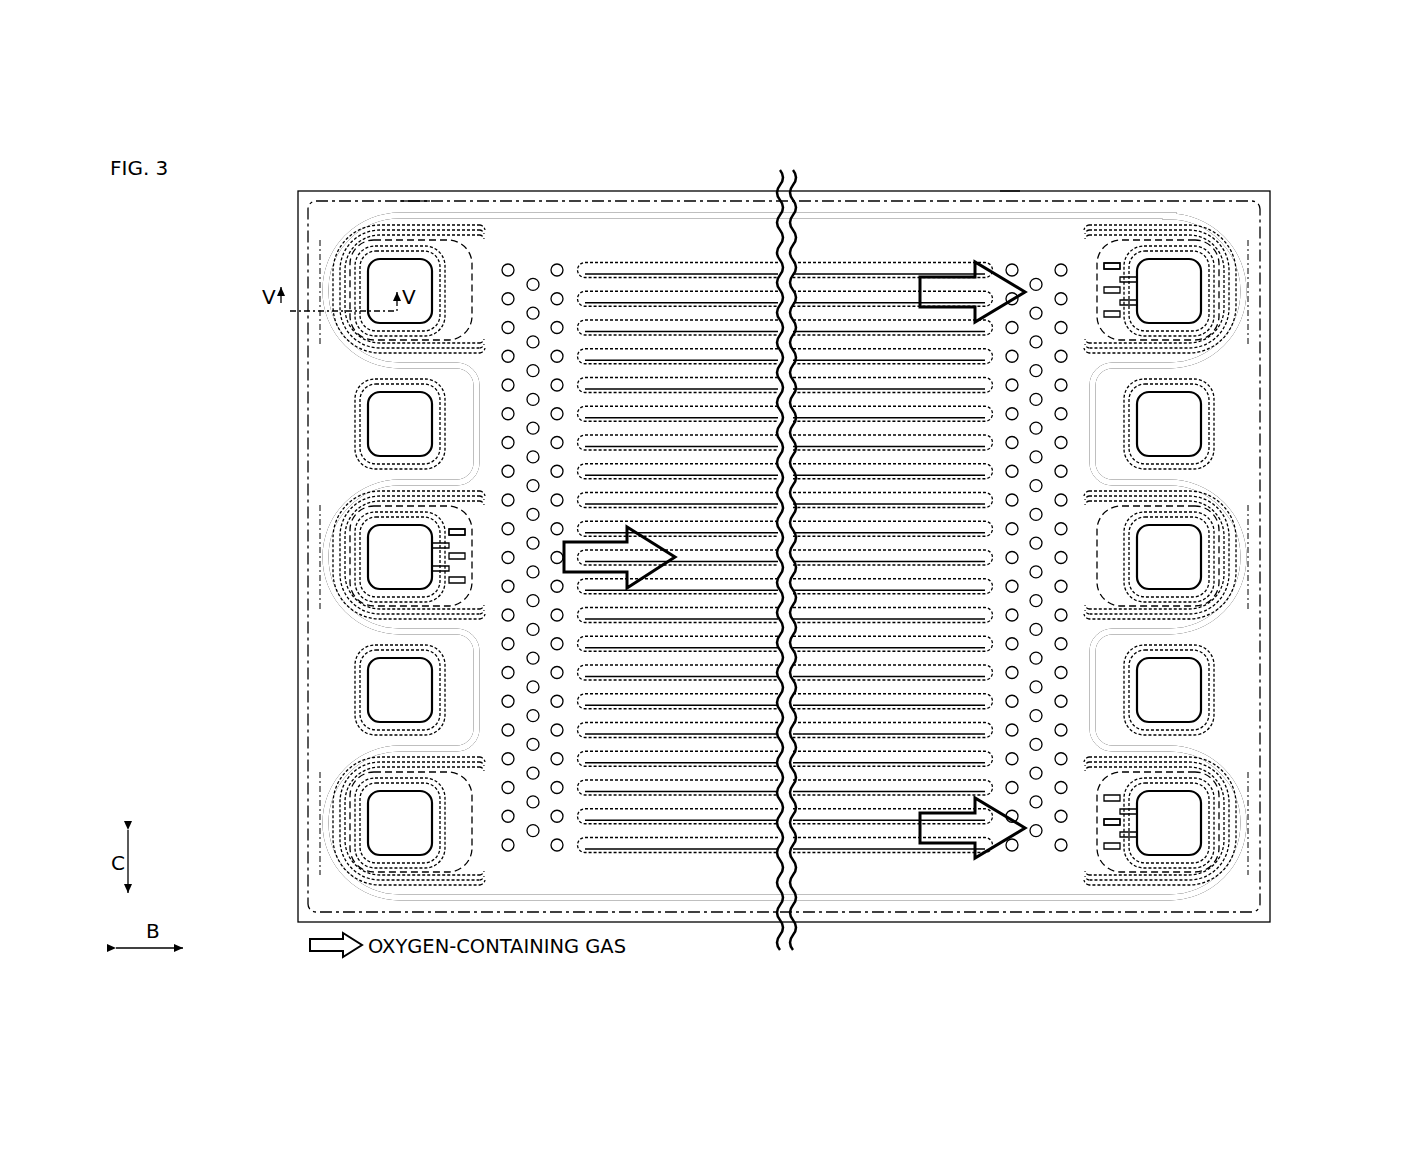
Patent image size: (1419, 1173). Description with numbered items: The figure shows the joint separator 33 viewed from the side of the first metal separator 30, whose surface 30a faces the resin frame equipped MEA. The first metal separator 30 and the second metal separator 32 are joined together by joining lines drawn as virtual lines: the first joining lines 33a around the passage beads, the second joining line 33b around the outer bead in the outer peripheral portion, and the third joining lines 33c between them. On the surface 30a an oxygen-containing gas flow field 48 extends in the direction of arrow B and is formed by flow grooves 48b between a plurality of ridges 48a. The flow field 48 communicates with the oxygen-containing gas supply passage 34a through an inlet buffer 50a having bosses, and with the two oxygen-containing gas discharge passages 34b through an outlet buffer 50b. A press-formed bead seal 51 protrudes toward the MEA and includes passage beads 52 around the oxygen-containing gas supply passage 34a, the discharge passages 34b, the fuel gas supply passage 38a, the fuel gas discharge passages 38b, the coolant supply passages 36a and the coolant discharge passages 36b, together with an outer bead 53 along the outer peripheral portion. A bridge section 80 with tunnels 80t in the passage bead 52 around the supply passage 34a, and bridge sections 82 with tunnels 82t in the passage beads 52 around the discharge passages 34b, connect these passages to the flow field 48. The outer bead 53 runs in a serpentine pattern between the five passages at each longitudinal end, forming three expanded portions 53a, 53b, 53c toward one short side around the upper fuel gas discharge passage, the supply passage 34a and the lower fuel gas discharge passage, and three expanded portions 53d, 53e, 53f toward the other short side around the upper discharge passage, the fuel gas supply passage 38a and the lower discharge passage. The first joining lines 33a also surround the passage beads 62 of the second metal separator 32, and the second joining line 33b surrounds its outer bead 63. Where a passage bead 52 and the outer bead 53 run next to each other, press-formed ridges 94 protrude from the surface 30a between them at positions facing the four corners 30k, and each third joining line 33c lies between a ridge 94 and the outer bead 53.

The first metal separator 30 is at (990, 188).
The surface 30a is at (842, 240).
The corners 30k is at (297, 190).
The second metal separator 32 is at (1022, 188).
The joint separator 33 is at (173, 207).
The first joining lines 33a is at (320, 360).
The second joining line 33b is at (414, 196).
The third joining lines 33c is at (326, 318).
The oxygen-containing gas supply passage 34a is at (386, 535).
The oxygen-containing gas discharge passages 34b is at (1170, 275).
The coolant supply passages 36a is at (1185, 440).
The coolant discharge passages 36b is at (386, 440).
The fuel gas supply passage 38a is at (1188, 567).
The fuel gas discharge passages 38b is at (386, 298).
The oxygen-containing gas flow field 48 is at (748, 172).
The ridges 48a is at (640, 300).
The flow grooves 48b is at (685, 280).
The inlet buffer 50a is at (555, 264).
The outlet buffer 50b is at (1010, 264).
The bead seal 51 is at (1363, 876).
The passage beads 52 is at (372, 262).
The outer bead 53 is at (521, 212).
The expanded portion 53a is at (340, 330).
The expanded portion 53b is at (344, 590).
The expanded portion 53c is at (344, 850).
The expanded portion 53d is at (1228, 300).
The expanded portion 53e is at (1238, 506).
The expanded portion 53f is at (1236, 848).
The passage beads 62 is at (358, 252).
The outer bead 63 is at (581, 262).
The bridge section 80 is at (460, 522).
The tunnels 80t is at (455, 581).
The bridge section 82 is at (1110, 332).
The tunnels 82t is at (1108, 264).
The ridges 94 is at (398, 235).